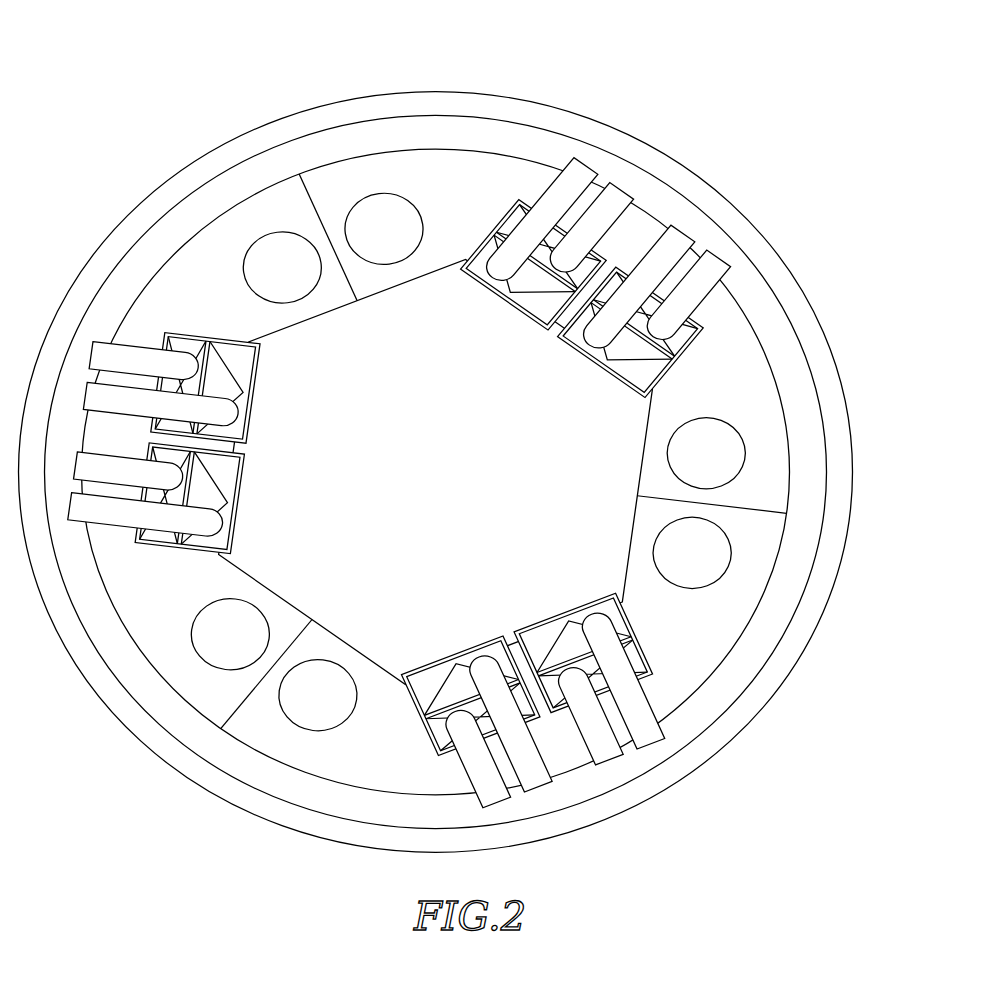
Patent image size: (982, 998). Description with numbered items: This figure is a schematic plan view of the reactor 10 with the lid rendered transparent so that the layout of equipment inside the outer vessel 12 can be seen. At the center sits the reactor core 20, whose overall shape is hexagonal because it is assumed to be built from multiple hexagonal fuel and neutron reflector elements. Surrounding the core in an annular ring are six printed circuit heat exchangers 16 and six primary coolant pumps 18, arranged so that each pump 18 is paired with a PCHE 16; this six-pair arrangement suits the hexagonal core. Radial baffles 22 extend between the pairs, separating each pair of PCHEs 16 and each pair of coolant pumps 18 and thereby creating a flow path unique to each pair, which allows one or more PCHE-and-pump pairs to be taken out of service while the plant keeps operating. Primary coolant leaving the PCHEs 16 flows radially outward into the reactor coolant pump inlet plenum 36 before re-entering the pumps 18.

The reactor 10 is at (456, 452).
The outer vessel 12 is at (690, 748).
The printed circuit heat exchangers 16 is at (230, 350).
The primary coolant pumps 18 is at (287, 247).
The reactor core 20 is at (635, 427).
The radial baffles 22 is at (308, 178).
The reactor coolant pump inlet plenum 36 is at (183, 248).